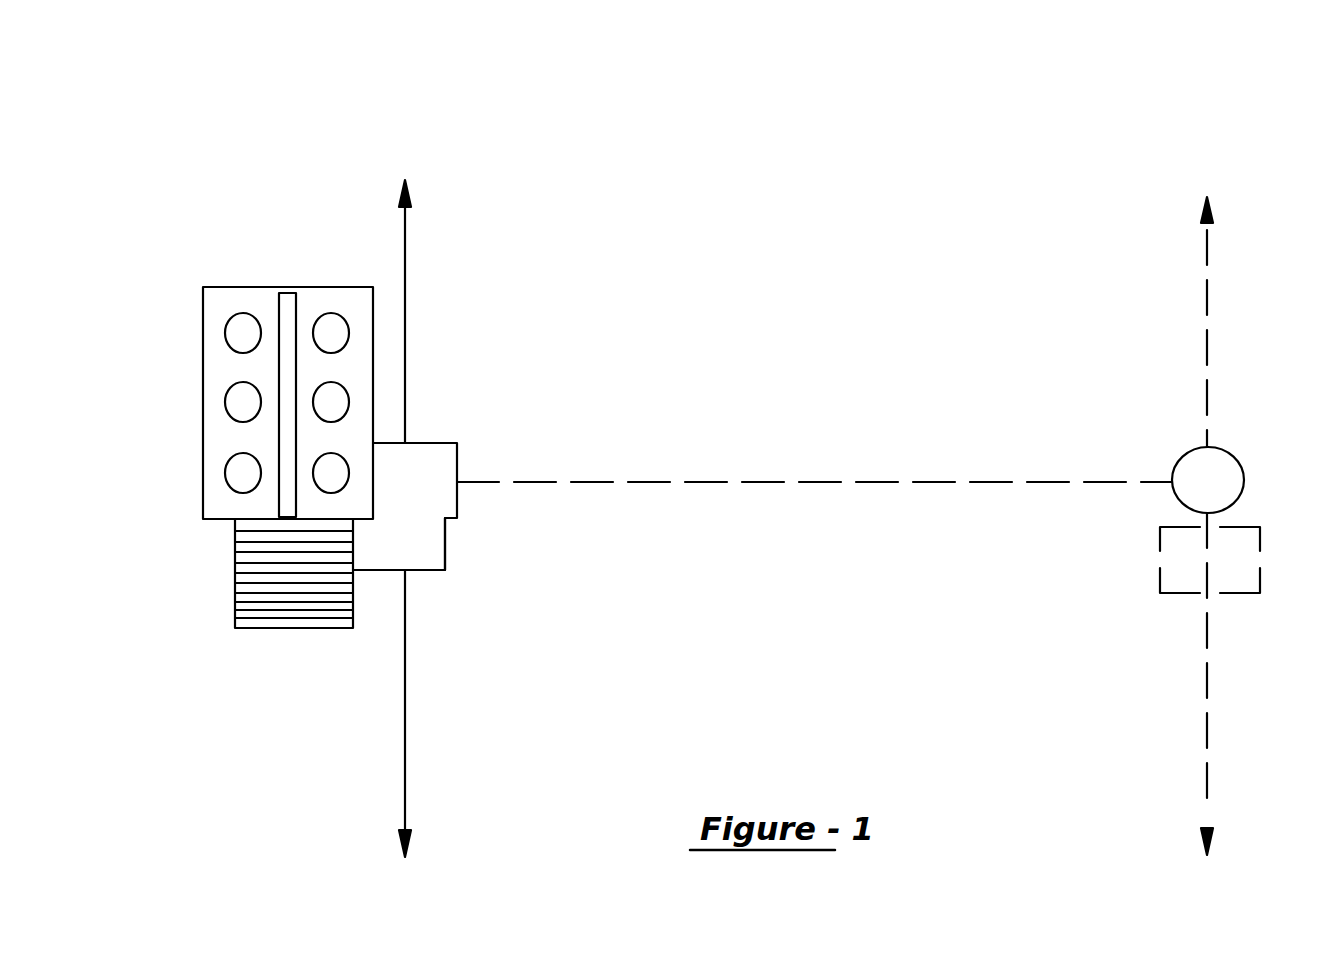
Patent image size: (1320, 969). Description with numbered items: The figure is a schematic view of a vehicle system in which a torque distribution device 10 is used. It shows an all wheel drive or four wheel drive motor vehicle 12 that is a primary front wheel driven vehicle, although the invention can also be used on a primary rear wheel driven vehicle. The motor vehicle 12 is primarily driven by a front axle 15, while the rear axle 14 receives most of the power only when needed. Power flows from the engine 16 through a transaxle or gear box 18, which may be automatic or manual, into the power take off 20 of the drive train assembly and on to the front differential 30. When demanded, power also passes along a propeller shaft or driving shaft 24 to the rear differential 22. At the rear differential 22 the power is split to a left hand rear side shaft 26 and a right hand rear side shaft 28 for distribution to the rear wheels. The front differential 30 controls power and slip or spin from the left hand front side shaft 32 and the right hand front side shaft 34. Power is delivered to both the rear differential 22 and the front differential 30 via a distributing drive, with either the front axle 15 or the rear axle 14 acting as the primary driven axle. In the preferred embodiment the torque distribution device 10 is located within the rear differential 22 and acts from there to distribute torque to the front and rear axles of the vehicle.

The torque distribution device 10 is at (1193, 568).
The motor vehicle 12 is at (500, 183).
The rear axle 14 is at (1175, 432).
The front axle 15 is at (405, 382).
The engine 16 is at (245, 367).
The gear box 18 is at (298, 588).
The power take off 20 is at (457, 457).
The rear differential 22 is at (1225, 465).
The driving shaft 24 is at (788, 482).
The left hand rear side shaft 26 is at (1207, 251).
The right hand rear side shaft 28 is at (1207, 803).
The front differential 30 is at (432, 562).
The left hand front side shaft 32 is at (405, 268).
The right hand front side shaft 34 is at (405, 802).